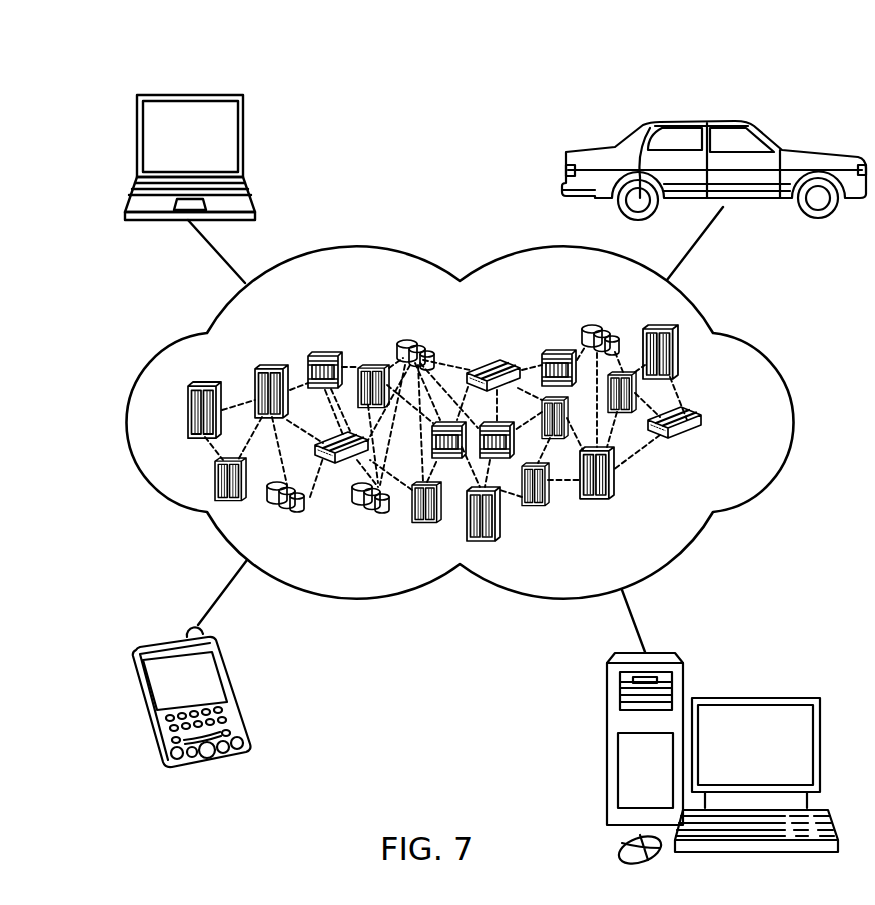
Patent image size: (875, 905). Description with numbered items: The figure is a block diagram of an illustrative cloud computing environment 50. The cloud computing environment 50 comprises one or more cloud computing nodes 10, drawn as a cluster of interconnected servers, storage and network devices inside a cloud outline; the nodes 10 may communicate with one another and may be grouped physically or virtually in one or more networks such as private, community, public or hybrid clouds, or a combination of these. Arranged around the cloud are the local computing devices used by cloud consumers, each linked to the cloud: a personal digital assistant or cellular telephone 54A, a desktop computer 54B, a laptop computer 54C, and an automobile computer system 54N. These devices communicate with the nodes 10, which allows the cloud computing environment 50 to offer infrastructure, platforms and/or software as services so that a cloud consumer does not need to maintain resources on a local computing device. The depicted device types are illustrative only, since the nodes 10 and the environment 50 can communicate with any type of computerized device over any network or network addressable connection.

The cloud computing node 10 is at (707, 422).
The cloud computing environment 50 is at (768, 338).
The personal digital assistant or cellular telephone 54A is at (172, 640).
The desktop computer 54B is at (757, 697).
The laptop computer 54C is at (190, 95).
The automobile computer system 54N is at (697, 120).